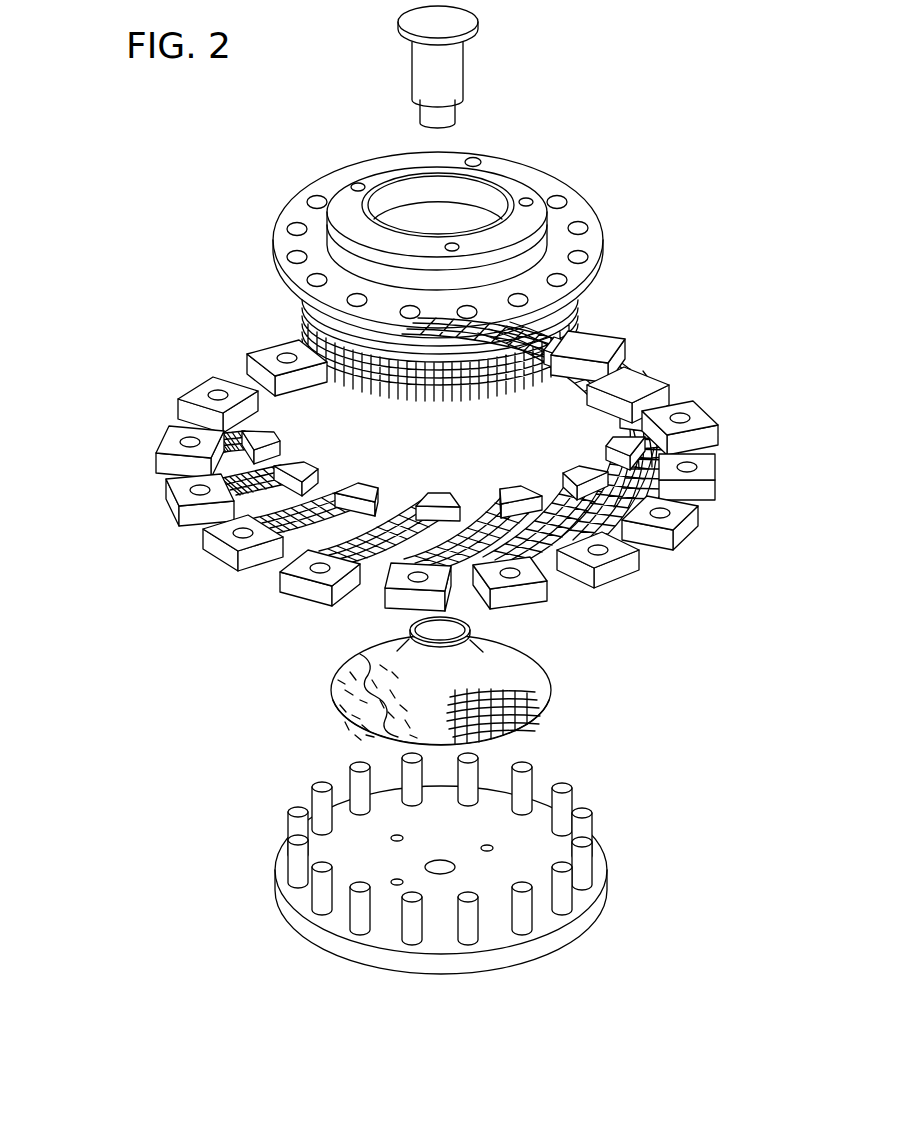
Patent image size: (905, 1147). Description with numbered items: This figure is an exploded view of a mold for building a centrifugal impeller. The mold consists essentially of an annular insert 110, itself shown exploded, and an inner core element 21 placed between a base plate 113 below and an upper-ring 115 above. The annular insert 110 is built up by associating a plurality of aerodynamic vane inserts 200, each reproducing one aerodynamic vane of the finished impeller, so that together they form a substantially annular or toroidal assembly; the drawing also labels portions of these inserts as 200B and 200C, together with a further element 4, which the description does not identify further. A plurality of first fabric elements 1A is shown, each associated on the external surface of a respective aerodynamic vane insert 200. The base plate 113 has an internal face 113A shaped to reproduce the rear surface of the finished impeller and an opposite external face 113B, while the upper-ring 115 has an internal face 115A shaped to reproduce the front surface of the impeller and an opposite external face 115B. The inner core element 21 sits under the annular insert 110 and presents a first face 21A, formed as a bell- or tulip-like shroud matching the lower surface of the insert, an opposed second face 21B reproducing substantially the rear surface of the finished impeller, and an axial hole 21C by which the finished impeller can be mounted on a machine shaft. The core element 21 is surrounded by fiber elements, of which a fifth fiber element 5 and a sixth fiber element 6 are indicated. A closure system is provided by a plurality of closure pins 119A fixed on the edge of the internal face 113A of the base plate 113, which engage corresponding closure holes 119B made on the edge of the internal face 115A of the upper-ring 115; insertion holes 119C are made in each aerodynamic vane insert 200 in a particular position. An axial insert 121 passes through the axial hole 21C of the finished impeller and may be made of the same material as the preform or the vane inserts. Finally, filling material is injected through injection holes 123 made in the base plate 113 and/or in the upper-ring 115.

The axial insert 121 is at (445, 97).
The upper-ring 115 is at (435, 226).
The internal face of the upper-ring 115A is at (282, 288).
The external face of the upper-ring 115B is at (314, 196).
The closure holes 119B is at (297, 258).
The injection holes 123 is at (532, 198).
The annular insert 110 is at (423, 472).
The inner ring band 4 is at (560, 336).
The first fabric elements 1A is at (550, 503).
The aerodynamic vane inserts 200 is at (423, 491).
The outer block of segment 200B is at (615, 553).
The inner tip of segment 200C is at (512, 497).
The insertion holes 119C is at (192, 488).
The fifth fiber element 5 is at (457, 699).
The inner core element 21 is at (457, 699).
The first face of the inner core element 21A is at (548, 690).
The second face of the inner core element 21B is at (530, 737).
The axial hole 21C is at (428, 632).
The sixth fiber element 6 is at (526, 678).
The base plate 113 is at (447, 879).
The internal face of the base plate 113A is at (352, 850).
The external face of the base plate 113B is at (588, 940).
The closure pins 119A is at (300, 858).